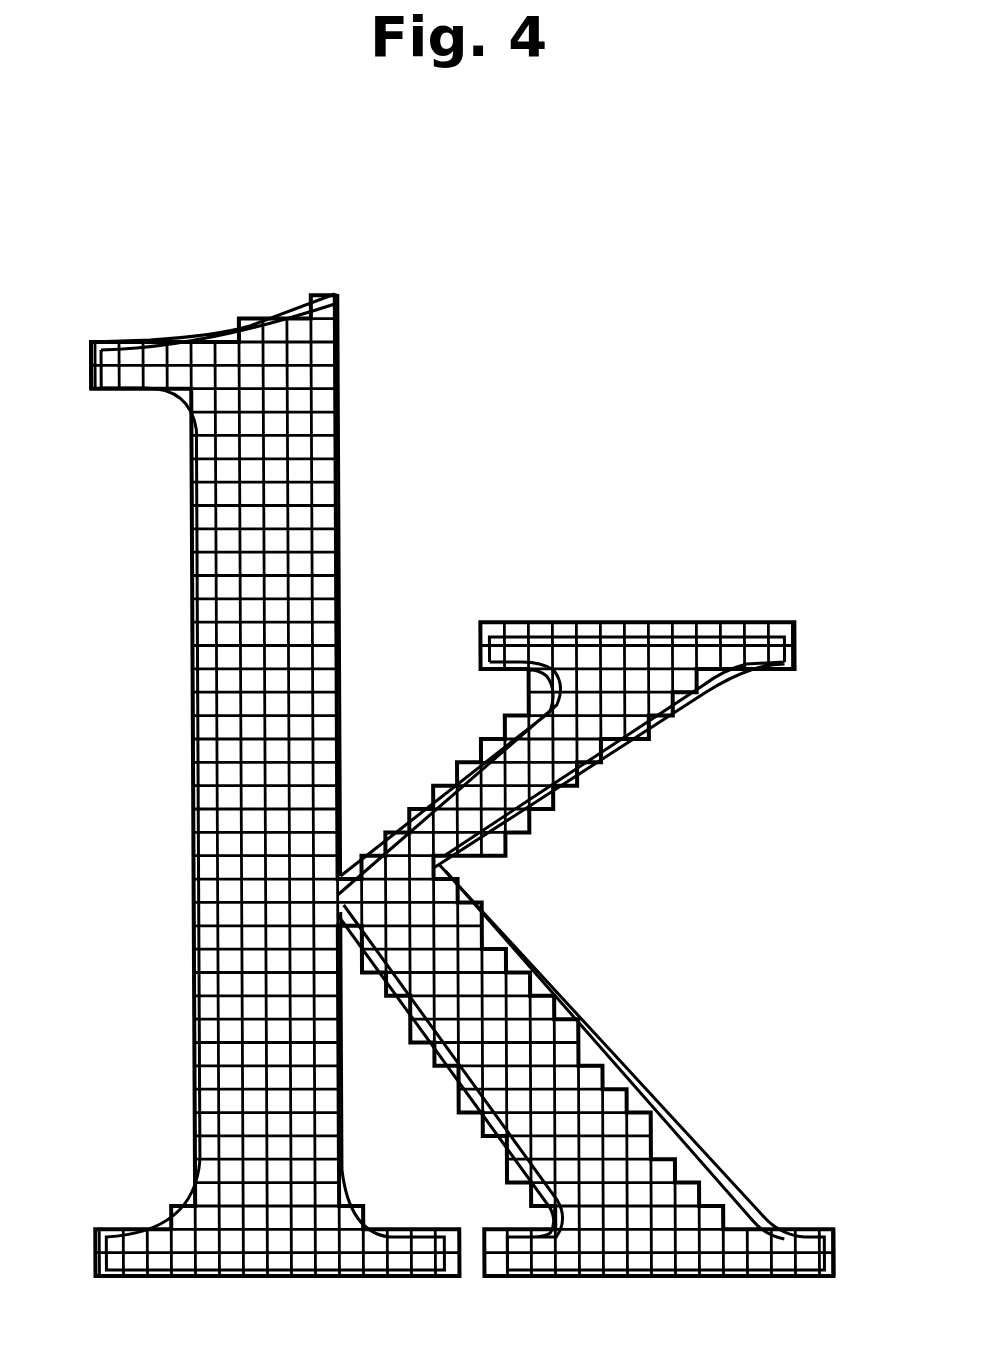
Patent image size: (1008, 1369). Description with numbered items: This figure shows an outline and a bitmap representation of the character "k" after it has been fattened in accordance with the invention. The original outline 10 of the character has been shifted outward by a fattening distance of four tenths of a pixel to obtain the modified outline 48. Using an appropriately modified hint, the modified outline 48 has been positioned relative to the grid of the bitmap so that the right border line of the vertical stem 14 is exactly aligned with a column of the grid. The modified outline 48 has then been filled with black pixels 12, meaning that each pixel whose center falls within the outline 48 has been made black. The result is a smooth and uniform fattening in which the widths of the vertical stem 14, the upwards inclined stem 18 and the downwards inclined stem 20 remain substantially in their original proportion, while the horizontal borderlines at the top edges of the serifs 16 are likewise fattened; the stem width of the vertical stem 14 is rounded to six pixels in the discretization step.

The outline 10 is at (337, 398).
The black pixels 12 is at (300, 493).
The vertical stem 14 is at (147, 745).
The serifs 16 is at (122, 302).
The upwards inclined stem 18 is at (447, 745).
The downwards inclined stem 20 is at (655, 1056).
The modified outline 48 is at (225, 320).